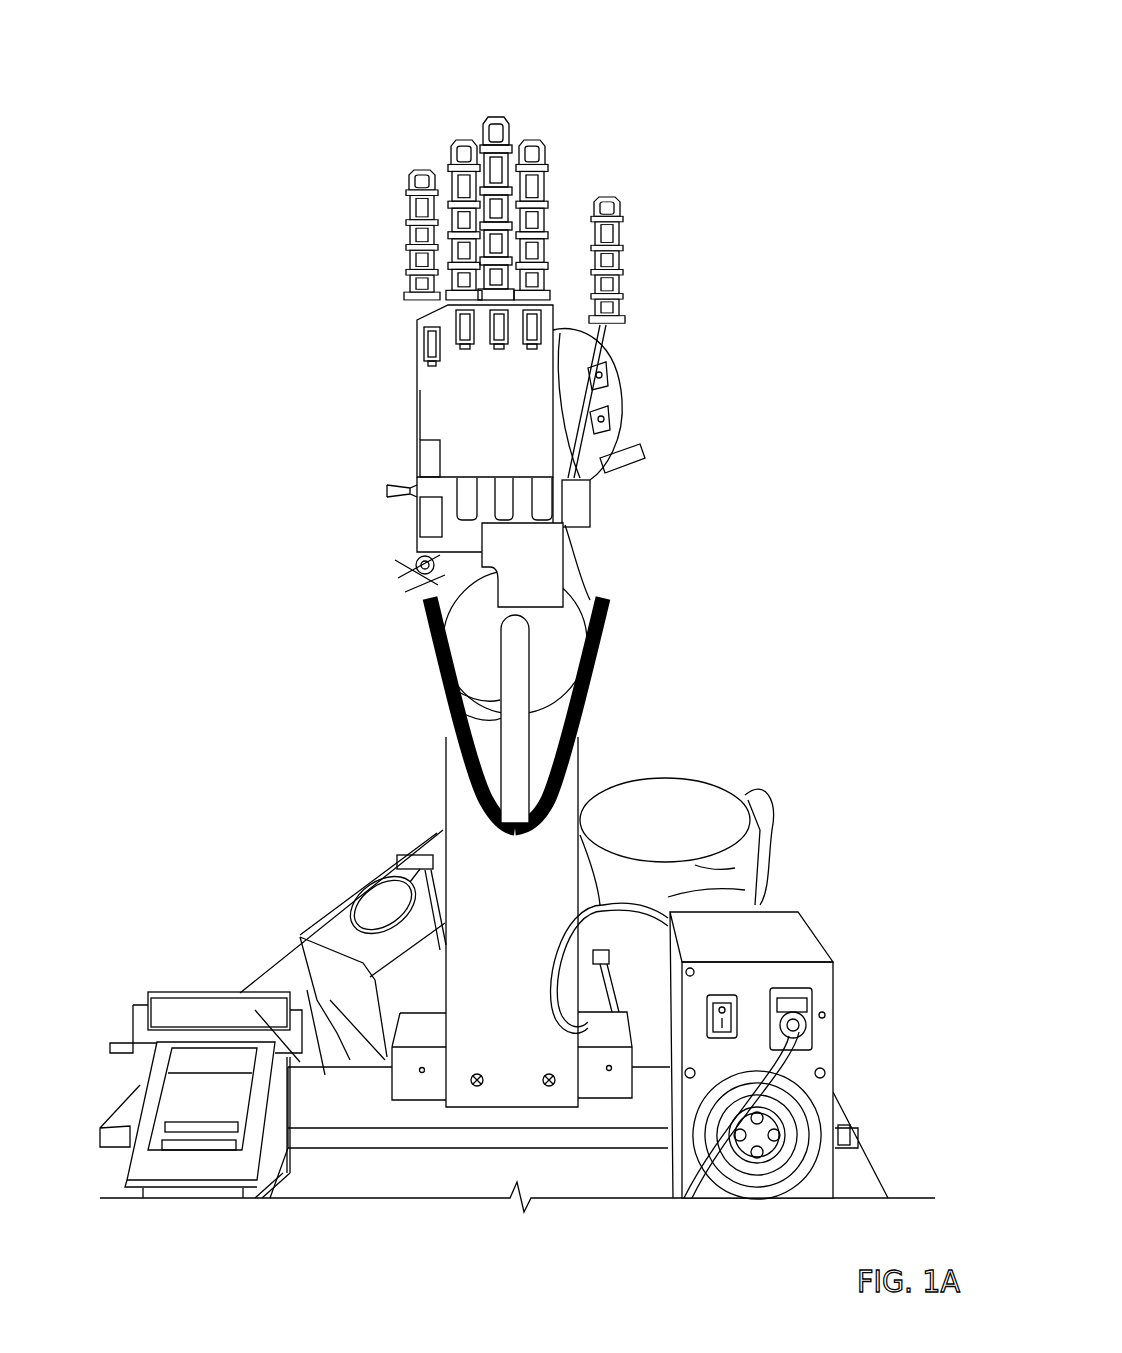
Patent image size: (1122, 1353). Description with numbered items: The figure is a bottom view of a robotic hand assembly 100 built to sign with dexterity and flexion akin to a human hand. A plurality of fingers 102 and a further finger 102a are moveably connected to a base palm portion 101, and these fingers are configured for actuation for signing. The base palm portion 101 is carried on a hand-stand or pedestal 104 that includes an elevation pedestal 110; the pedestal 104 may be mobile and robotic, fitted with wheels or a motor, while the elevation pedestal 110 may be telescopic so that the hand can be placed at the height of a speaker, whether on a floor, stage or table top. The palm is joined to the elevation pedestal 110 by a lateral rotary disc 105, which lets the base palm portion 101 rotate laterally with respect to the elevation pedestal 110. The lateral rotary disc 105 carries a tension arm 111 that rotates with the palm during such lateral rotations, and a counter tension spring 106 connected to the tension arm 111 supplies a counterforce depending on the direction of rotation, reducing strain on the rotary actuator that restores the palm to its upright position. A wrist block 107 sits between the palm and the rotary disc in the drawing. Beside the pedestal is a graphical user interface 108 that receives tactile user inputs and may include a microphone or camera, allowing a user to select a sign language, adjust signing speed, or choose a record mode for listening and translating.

The robotic hand assembly 100 is at (713, 117).
The base palm portion 101 is at (483, 440).
The fingers 102 is at (482, 128).
The finger 102a is at (625, 262).
The pedestal 104 is at (455, 1107).
The lateral rotary disc 105 is at (577, 605).
The counter tension spring 106 is at (588, 712).
The wrist block 107 is at (540, 555).
The graphical user interface 108 is at (175, 1110).
The elevation pedestal 110 is at (460, 845).
The tension arm 111 is at (515, 720).